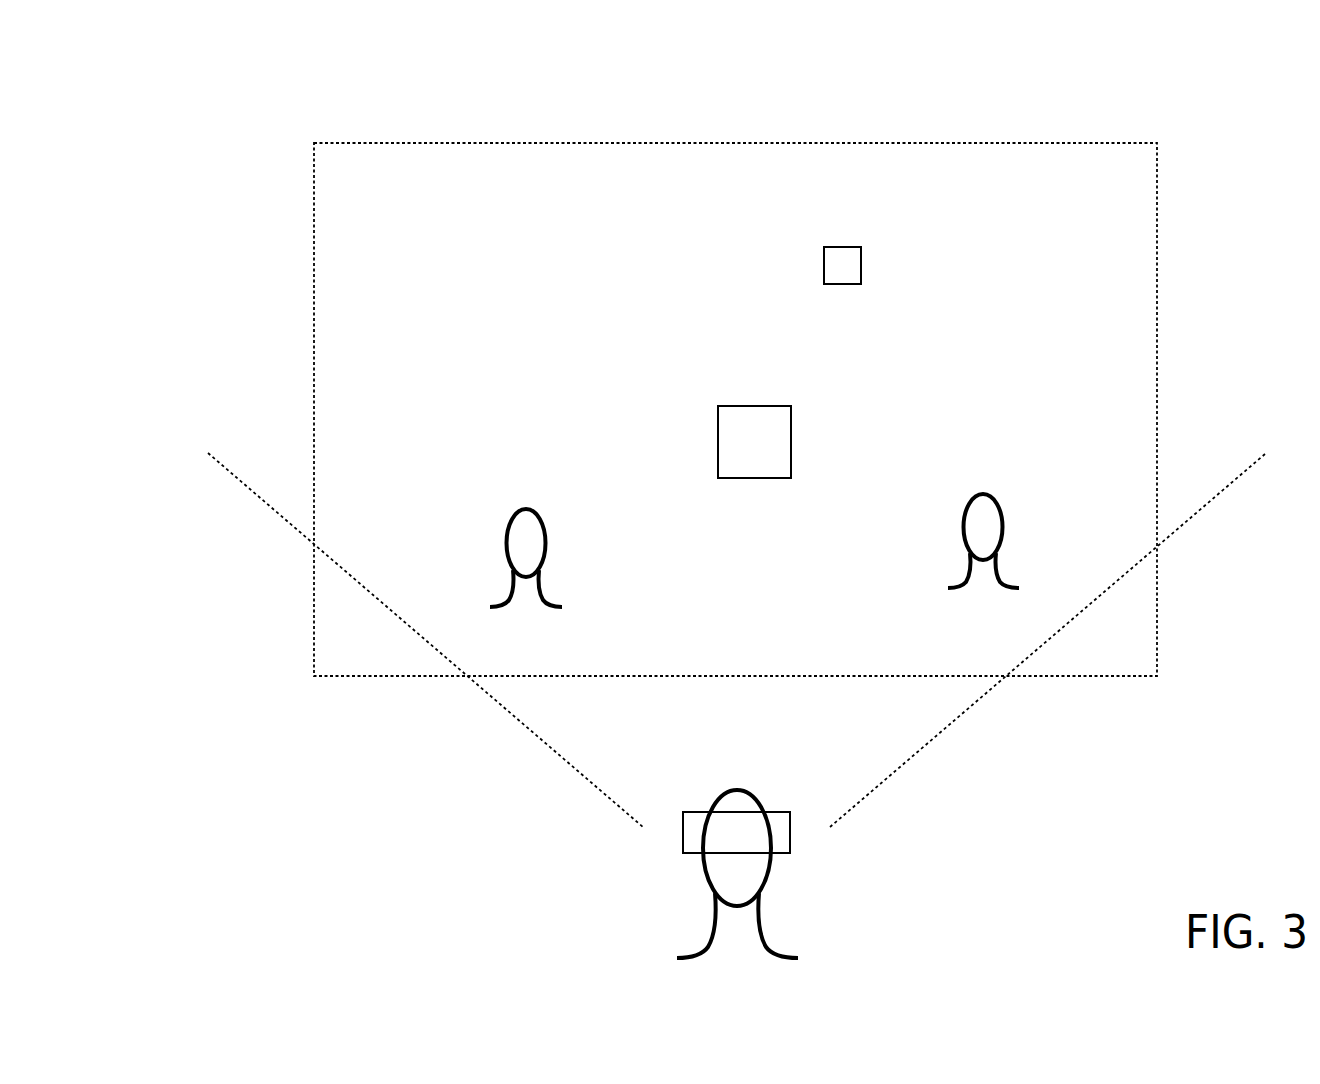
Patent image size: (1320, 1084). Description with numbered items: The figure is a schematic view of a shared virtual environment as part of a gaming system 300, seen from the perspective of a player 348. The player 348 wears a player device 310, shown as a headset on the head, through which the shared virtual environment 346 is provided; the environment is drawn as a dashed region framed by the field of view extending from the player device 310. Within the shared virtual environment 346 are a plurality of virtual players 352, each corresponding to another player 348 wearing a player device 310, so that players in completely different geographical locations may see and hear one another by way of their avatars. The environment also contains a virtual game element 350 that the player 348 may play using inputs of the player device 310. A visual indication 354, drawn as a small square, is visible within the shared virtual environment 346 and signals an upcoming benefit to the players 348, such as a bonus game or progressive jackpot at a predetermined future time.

The gaming system 300 is at (205, 82).
The shared virtual environment 346 is at (313, 295).
The visual indication 354 is at (866, 262).
The virtual game element 350 is at (805, 397).
The virtual player 352 is at (500, 557).
The player device 310 is at (802, 850).
The player 348 is at (697, 886).